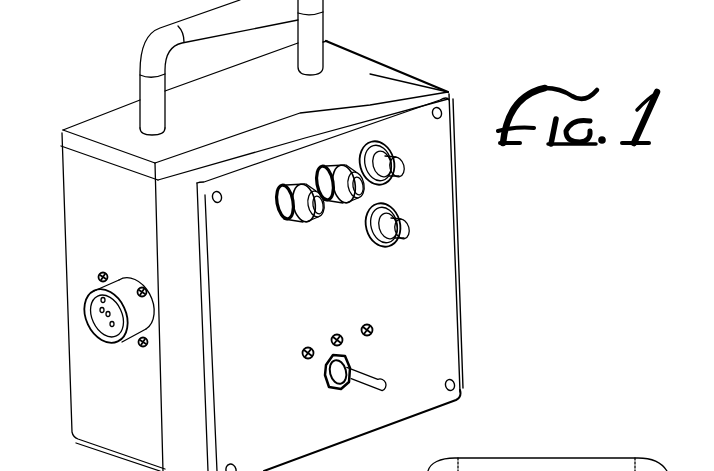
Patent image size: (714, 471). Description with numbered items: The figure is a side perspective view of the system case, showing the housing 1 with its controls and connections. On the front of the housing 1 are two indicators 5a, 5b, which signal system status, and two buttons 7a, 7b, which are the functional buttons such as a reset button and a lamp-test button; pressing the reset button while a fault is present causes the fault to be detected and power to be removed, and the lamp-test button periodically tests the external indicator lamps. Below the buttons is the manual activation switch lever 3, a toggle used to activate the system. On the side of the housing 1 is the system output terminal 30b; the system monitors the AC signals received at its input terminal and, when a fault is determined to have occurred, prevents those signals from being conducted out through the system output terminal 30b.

The housing 1 is at (388, 62).
The manual activation switch lever 3 is at (352, 398).
The indicator 5a is at (403, 169).
The indicator 5b is at (408, 231).
The button 7a is at (322, 225).
The button 7b is at (361, 208).
The system output terminal 30b is at (91, 293).